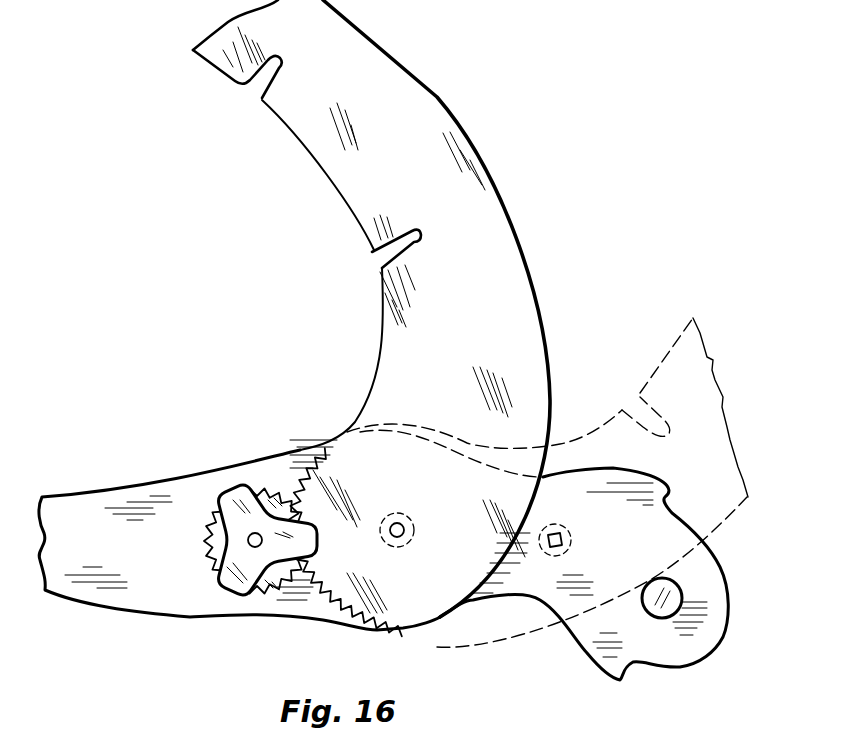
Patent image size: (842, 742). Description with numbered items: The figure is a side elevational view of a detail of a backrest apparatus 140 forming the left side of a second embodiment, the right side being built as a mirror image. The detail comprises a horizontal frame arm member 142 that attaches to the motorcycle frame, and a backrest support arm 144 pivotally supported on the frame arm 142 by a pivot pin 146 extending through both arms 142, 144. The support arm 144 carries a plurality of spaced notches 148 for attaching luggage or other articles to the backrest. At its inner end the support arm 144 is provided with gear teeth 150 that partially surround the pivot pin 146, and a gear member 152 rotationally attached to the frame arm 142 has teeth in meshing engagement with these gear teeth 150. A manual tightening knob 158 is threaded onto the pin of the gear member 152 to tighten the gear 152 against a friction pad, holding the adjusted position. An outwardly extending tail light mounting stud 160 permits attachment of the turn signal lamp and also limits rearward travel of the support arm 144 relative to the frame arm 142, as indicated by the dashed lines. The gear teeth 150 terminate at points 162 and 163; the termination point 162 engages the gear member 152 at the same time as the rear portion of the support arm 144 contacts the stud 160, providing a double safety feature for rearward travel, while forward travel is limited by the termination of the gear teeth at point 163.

The backrest detail 140 is at (566, 292).
The horizontal frame arm member 142 is at (107, 493).
The backrest support arm 144 is at (438, 98).
The pivot pin 146 is at (400, 538).
The spaced notches 148 is at (280, 58).
The gear teeth 150 is at (333, 620).
The gear member 152 is at (273, 494).
The manual tightening knob 158 is at (222, 491).
The tail light mounting stud 160 is at (667, 620).
The termination point 162 is at (397, 634).
The termination point 163 is at (327, 450).